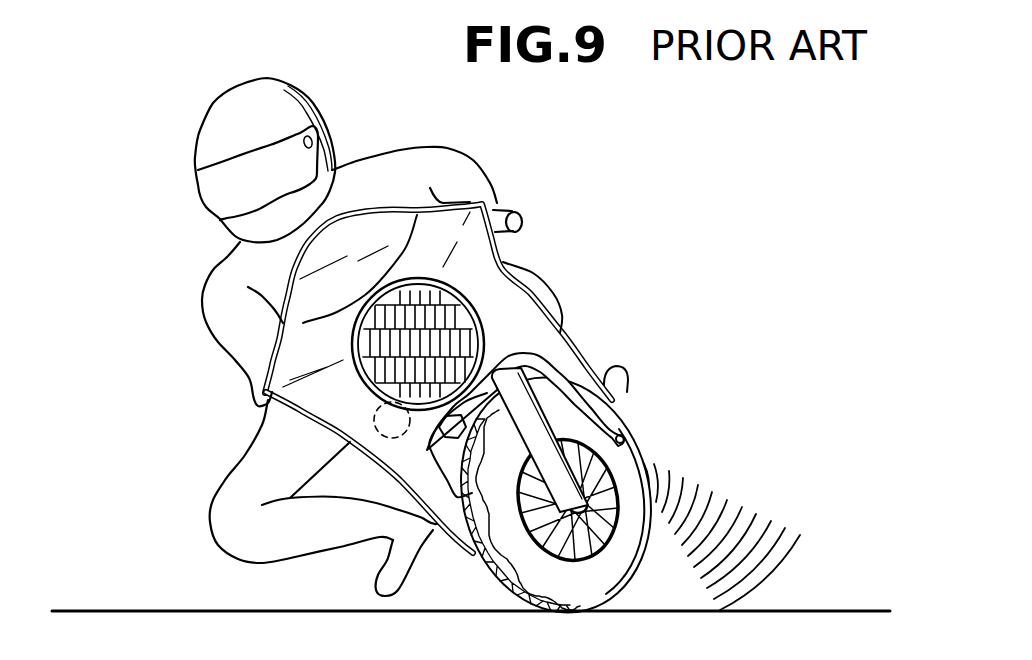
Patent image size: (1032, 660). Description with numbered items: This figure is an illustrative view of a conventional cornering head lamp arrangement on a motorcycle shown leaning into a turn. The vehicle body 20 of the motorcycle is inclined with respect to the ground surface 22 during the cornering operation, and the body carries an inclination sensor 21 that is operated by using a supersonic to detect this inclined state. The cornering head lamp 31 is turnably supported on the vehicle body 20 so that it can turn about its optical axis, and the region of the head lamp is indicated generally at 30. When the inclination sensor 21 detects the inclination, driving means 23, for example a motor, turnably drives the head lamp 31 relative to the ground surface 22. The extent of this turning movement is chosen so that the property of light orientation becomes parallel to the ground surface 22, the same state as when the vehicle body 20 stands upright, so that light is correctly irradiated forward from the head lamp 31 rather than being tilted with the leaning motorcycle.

The vehicle body 20 is at (512, 317).
The inclination sensor 21 is at (627, 437).
The ground surface 22 is at (131, 610).
The driving means 23 is at (378, 417).
The headlight 30 is at (485, 342).
The cornering head lamp 31 is at (453, 318).